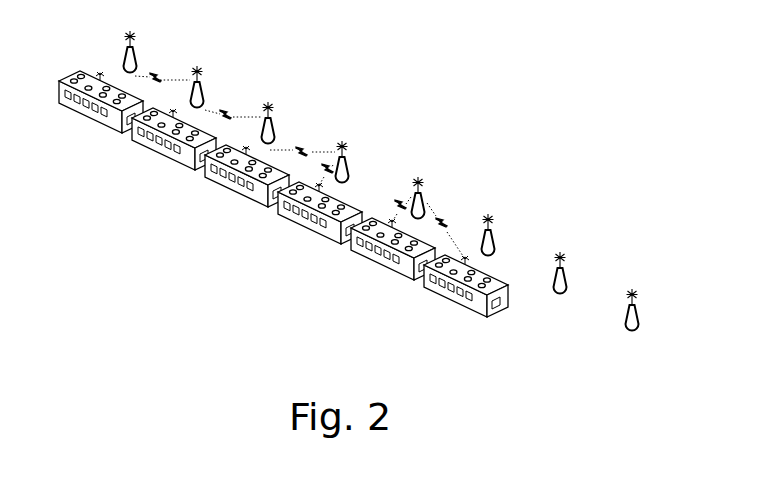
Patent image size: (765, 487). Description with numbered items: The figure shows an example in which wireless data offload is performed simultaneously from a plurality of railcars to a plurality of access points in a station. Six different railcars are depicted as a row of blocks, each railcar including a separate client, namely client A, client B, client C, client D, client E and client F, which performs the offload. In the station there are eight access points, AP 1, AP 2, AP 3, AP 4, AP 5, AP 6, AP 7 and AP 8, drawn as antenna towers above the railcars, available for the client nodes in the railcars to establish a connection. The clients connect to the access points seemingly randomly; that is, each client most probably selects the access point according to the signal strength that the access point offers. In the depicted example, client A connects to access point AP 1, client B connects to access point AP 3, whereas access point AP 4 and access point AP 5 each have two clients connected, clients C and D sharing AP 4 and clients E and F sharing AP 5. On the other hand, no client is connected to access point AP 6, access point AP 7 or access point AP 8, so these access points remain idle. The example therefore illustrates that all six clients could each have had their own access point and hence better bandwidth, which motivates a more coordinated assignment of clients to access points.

The access point AP1 1 is at (131, 38).
The access point AP2 2 is at (197, 75).
The access point AP3 3 is at (266, 112).
The access point AP4 4 is at (341, 151).
The access point AP5 5 is at (417, 187).
The access point AP6 6 is at (486, 224).
The access point AP7 7 is at (562, 261).
The access point AP8 8 is at (632, 297).
The client A is at (93, 109).
The client B is at (167, 147).
The client C is at (239, 184).
The client D is at (312, 221).
The client E is at (386, 257).
The client F is at (460, 294).